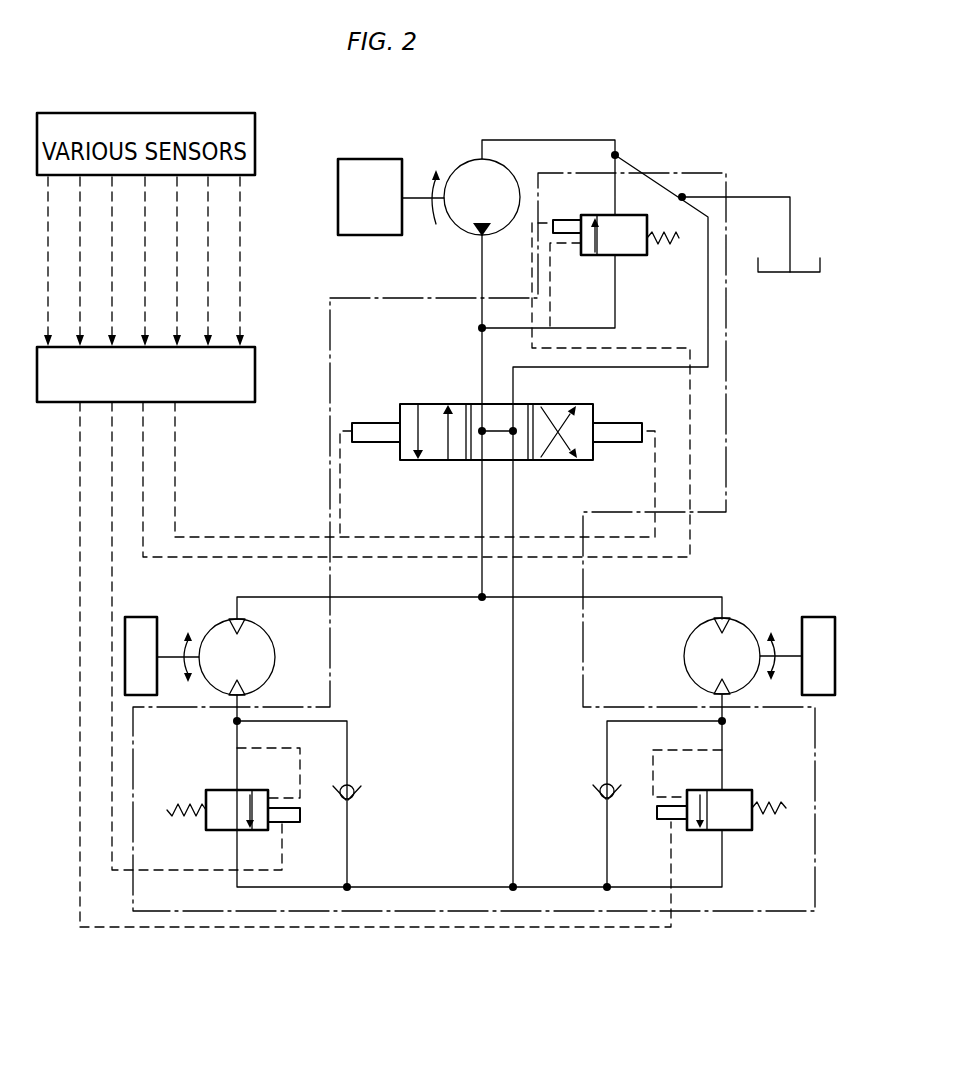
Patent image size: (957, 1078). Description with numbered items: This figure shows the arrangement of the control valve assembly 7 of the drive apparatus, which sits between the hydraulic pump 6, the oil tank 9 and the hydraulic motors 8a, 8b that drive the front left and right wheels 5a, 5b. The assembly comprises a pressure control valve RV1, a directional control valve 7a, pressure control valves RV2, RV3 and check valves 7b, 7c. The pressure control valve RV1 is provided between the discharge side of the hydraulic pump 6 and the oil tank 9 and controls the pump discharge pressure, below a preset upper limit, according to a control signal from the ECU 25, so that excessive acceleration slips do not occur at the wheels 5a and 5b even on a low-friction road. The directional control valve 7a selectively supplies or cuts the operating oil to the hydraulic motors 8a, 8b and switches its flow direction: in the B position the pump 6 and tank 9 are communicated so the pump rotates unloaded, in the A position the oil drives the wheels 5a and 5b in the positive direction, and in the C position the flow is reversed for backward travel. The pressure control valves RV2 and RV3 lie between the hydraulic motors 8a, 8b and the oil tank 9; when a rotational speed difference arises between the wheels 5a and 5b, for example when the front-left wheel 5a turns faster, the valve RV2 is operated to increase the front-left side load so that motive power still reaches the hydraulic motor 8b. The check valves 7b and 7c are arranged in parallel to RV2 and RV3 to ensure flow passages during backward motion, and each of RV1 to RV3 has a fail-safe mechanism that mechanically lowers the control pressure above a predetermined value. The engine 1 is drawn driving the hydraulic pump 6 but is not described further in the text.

The engine 1 is at (347, 158).
The hydraulic pump 6 is at (465, 161).
The control valve assembly 7 is at (715, 172).
The oil tank 9 is at (806, 267).
The ECU 25 is at (255, 357).
The directional control valve 7a is at (430, 402).
The check valve 7b is at (361, 796).
The check valve 7c is at (592, 794).
The front-left wheel 5a is at (148, 616).
The front-right wheel 5b is at (815, 616).
The hydraulic motor 8a is at (276, 648).
The hydraulic motor 8b is at (744, 618).
The pressure control valve RV1 is at (585, 258).
The pressure control valve RV2 is at (217, 832).
The pressure control valve RV3 is at (740, 834).
The A position A is at (428, 464).
The B position B is at (497, 464).
The C position C is at (560, 464).